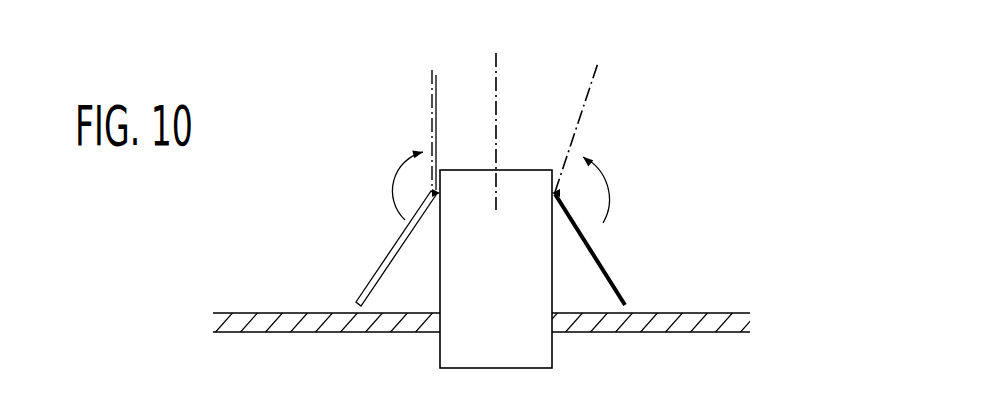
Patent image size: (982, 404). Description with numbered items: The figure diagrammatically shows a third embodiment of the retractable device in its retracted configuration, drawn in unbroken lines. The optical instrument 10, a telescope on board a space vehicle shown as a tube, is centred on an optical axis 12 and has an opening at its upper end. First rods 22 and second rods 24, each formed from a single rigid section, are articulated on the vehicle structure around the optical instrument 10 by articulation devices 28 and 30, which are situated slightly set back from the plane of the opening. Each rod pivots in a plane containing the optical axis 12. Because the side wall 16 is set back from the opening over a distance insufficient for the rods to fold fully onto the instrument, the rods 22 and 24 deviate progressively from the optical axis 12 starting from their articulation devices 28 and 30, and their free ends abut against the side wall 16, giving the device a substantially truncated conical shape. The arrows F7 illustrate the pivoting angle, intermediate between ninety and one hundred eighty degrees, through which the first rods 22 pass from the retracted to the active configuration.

The optical instrument 10 is at (530, 347).
The optical axis 12 is at (497, 93).
The side wall 16 is at (713, 318).
The first rods 22 is at (388, 260).
The second rods 24 is at (597, 250).
The articulation devices for the first rods 28 is at (432, 193).
The articulation devices for the second rods 30 is at (556, 194).
The arrows F7 is at (400, 165).